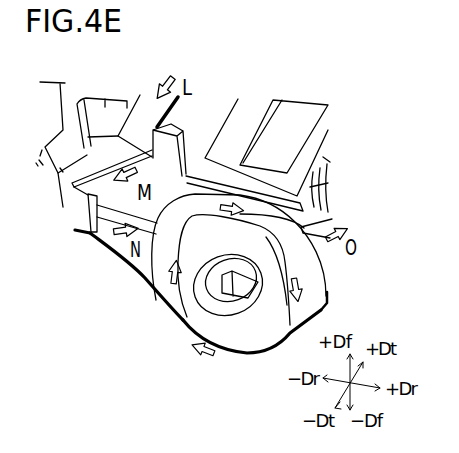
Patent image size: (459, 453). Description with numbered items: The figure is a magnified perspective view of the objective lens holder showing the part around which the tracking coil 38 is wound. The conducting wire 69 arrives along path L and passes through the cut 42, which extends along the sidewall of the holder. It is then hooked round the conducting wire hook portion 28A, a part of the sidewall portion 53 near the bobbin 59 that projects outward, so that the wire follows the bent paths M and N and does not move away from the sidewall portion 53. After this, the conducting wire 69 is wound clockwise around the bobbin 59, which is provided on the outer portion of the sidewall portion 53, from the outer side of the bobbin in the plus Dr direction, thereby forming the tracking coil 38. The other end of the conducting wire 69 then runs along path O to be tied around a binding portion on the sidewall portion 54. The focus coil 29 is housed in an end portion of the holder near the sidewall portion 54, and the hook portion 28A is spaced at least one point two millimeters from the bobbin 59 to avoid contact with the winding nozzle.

The conducting wire hook portion 28A is at (76, 232).
The focus coil 29 is at (227, 104).
The tracking coil 38 is at (178, 318).
The cut 42 is at (140, 148).
The sidewall portion 53 is at (140, 273).
The sidewall portion 54 is at (336, 163).
The bobbin 59 is at (224, 337).
The conducting wire 69 is at (100, 176).